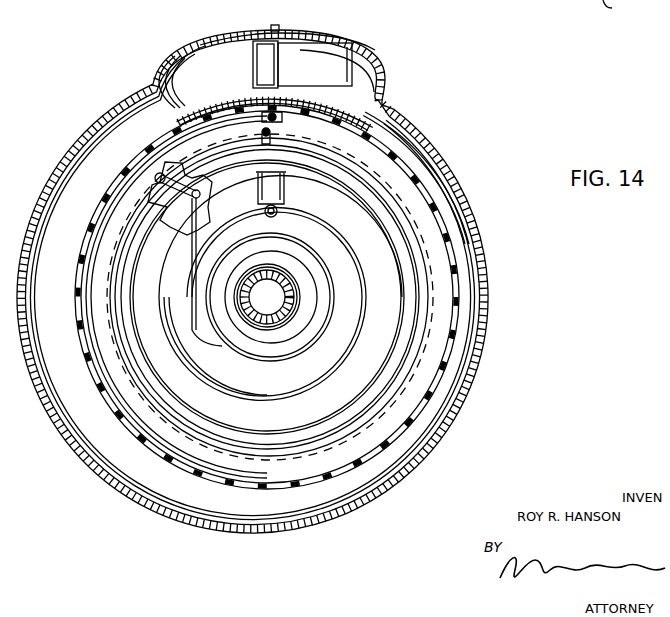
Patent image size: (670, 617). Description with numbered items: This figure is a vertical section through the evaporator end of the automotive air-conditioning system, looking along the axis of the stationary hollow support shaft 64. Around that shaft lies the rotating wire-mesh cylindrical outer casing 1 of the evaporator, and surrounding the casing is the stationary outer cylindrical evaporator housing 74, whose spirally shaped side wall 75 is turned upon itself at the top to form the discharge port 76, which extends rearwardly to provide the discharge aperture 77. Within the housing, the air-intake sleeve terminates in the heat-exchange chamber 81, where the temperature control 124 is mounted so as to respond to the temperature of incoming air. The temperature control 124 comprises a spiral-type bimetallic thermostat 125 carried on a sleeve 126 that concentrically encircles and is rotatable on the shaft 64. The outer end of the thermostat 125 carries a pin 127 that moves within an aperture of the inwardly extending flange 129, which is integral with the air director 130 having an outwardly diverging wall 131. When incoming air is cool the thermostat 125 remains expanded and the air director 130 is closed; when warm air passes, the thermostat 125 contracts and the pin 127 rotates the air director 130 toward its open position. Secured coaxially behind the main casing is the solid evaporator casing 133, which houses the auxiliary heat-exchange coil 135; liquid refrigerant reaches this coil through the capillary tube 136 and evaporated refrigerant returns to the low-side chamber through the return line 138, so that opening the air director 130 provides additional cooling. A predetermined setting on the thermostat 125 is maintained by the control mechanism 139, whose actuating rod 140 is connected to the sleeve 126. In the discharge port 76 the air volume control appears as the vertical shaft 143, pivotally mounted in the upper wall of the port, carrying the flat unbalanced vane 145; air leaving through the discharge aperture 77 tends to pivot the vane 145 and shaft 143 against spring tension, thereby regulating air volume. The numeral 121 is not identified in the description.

The cylindrical outer casing 1 is at (466, 312).
The stationary hollow support shaft 64 is at (290, 298).
The outer cylindrical evaporator housing 74 is at (102, 94).
The spirally shaped side wall 75 is at (66, 142).
The discharge port 76 is at (228, 52).
The discharge aperture 77 is at (372, 64).
The heat-exchange chamber 81 is at (424, 163).
The element 121 is at (622, 10).
The temperature control 124 is at (142, 214).
The spiral-type bimetallic thermostat 125 is at (308, 244).
The sleeve 126 is at (292, 280).
The pin 127 is at (280, 209).
The inwardly extending flange 129 is at (285, 190).
The air director 130 is at (375, 328).
The outwardly diverging wall 131 is at (372, 354).
The evaporator casing 133 is at (392, 140).
The auxiliary heat-exchange coil 135 is at (432, 242).
The capillary tube 136 is at (283, 118).
The return line 138 is at (272, 132).
The control mechanism 139 is at (170, 182).
The actuating rod 140 is at (226, 348).
The vertical shaft 143 is at (278, 36).
The flat unbalanced vane 145 is at (318, 54).